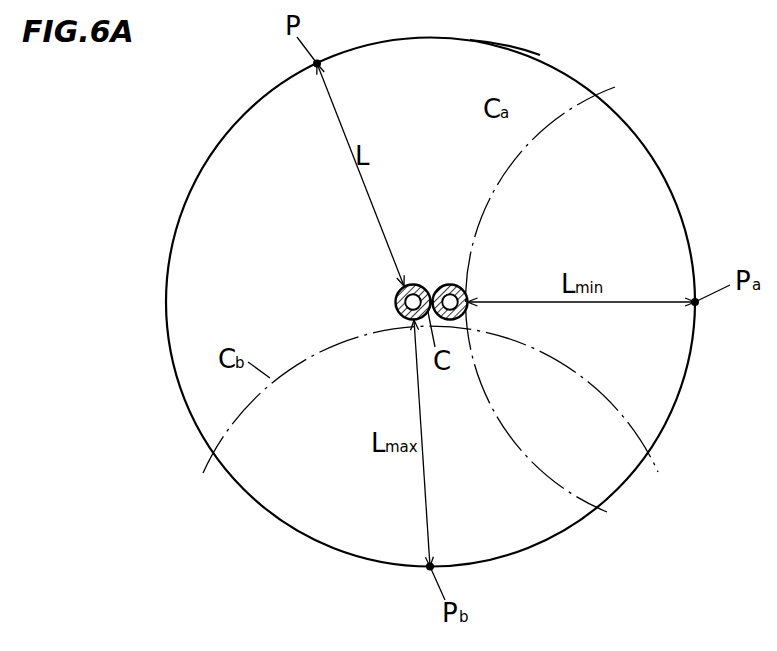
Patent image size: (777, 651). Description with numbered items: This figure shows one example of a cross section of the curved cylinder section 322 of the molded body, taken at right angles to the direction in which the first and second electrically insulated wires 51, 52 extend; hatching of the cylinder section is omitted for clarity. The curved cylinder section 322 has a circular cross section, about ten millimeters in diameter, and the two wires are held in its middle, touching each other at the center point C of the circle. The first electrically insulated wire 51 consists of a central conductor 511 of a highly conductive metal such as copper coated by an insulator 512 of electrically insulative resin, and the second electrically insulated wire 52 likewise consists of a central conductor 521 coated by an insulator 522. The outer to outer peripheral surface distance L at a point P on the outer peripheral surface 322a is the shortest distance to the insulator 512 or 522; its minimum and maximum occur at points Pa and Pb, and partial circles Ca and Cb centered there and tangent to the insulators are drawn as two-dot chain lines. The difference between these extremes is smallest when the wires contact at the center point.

The curved cylinder section 322 is at (275, 124).
The outer peripheral surface 322a is at (502, 47).
The first electrically insulated wire 51 is at (377, 309).
The central conductor 511 is at (407, 318).
The insulator 512 is at (400, 293).
The second electrically insulated wire 52 is at (476, 262).
The central conductor 521 is at (455, 297).
The insulator 522 is at (463, 287).